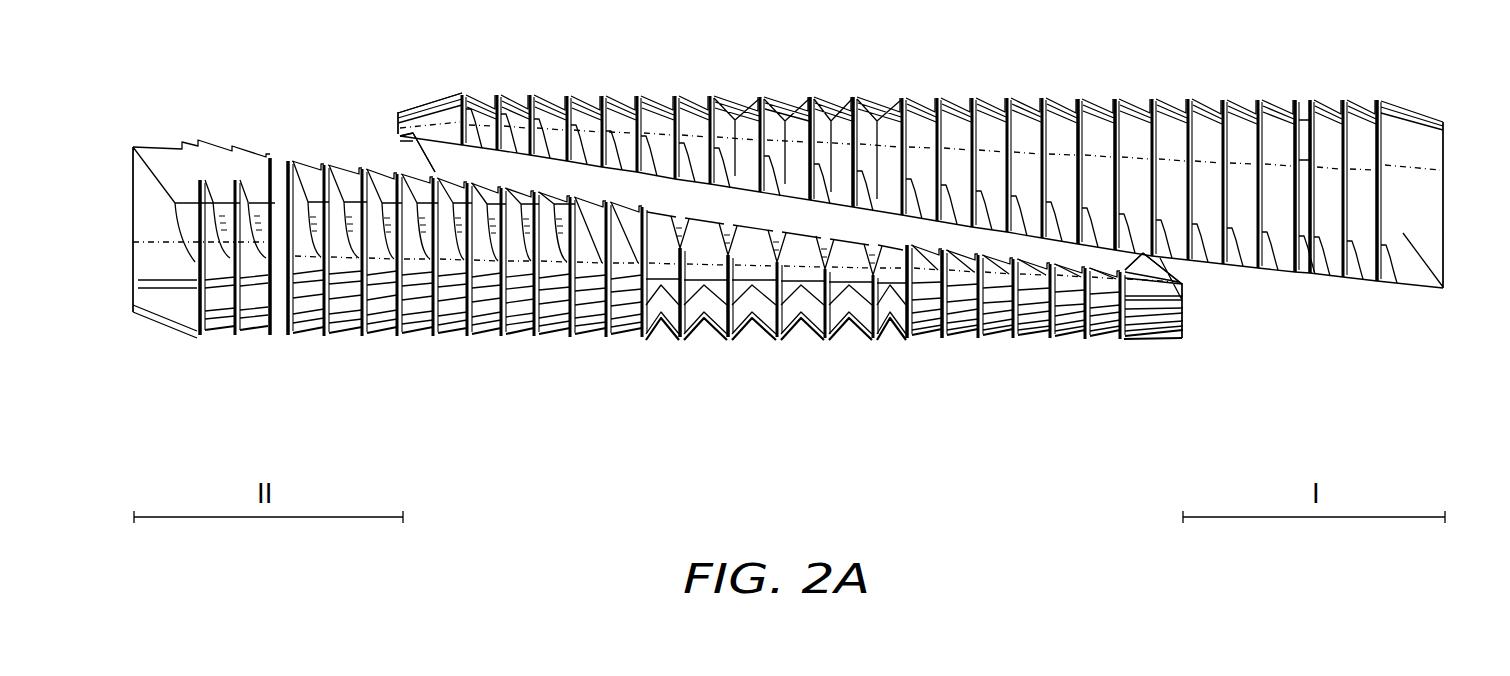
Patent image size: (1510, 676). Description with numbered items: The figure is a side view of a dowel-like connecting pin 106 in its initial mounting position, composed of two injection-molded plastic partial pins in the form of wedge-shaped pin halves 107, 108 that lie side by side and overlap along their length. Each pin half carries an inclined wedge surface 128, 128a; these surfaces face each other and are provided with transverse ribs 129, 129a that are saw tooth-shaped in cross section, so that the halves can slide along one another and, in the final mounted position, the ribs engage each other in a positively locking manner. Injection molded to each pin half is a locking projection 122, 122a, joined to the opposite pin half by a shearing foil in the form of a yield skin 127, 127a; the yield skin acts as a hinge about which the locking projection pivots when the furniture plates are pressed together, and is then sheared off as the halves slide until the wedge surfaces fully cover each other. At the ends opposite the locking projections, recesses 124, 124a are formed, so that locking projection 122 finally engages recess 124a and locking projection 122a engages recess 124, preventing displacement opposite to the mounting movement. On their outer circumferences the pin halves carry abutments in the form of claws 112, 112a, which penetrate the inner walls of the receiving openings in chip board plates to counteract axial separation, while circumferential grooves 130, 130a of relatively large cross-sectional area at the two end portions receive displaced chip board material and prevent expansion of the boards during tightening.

The connecting pin 106 is at (661, 88).
The wedge-shaped pin half 107 is at (942, 98).
The wedge-shaped pin half 108 is at (593, 318).
The claw 112 is at (1379, 97).
The claw 112a is at (199, 340).
The locking projection 122 is at (398, 128).
The locking projection 122a is at (1183, 293).
The recess 124 is at (1420, 292).
The recess 124a is at (136, 147).
The yield skin 127 is at (435, 173).
The yield skin 127a is at (1160, 258).
The wedge surface 128 is at (830, 203).
The wedge surface 128a is at (708, 325).
The rib 129 is at (1097, 198).
The rib 129a is at (930, 250).
The circumferential groove 130 is at (1300, 118).
The circumferential groove 130a is at (308, 156).